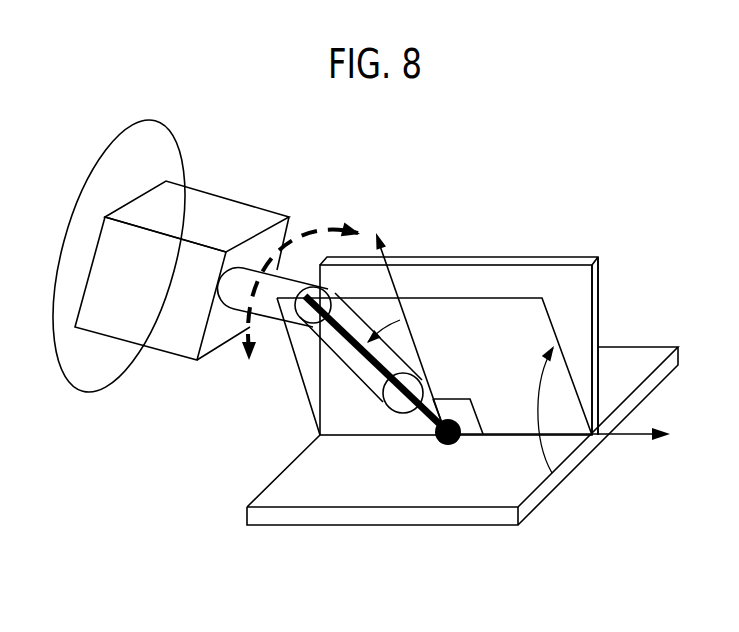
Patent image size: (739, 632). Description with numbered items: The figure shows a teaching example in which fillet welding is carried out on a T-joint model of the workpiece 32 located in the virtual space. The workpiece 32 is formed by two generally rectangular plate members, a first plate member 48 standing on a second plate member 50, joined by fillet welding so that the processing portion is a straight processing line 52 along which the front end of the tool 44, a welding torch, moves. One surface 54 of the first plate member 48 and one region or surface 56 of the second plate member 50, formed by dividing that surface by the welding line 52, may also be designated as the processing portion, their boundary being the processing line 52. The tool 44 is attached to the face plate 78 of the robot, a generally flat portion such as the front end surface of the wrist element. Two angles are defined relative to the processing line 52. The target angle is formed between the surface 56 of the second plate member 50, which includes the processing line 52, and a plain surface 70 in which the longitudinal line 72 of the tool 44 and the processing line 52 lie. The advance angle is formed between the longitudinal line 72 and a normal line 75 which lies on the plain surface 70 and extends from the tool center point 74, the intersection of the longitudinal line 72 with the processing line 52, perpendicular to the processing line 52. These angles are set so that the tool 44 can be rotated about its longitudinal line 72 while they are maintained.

The workpiece 32 is at (626, 245).
The tool 44 is at (173, 330).
The first plate member 48 is at (596, 307).
The second plate member 50 is at (535, 502).
The processing line 52 is at (566, 441).
The surface of first plate member 54 is at (537, 287).
The surface of second plate member 56 is at (413, 488).
The plain surface 70 is at (310, 375).
The longitudinal line 72 is at (284, 360).
The tool center point 74 is at (455, 444).
The normal line 75 is at (393, 280).
The face plate 78 is at (80, 375).